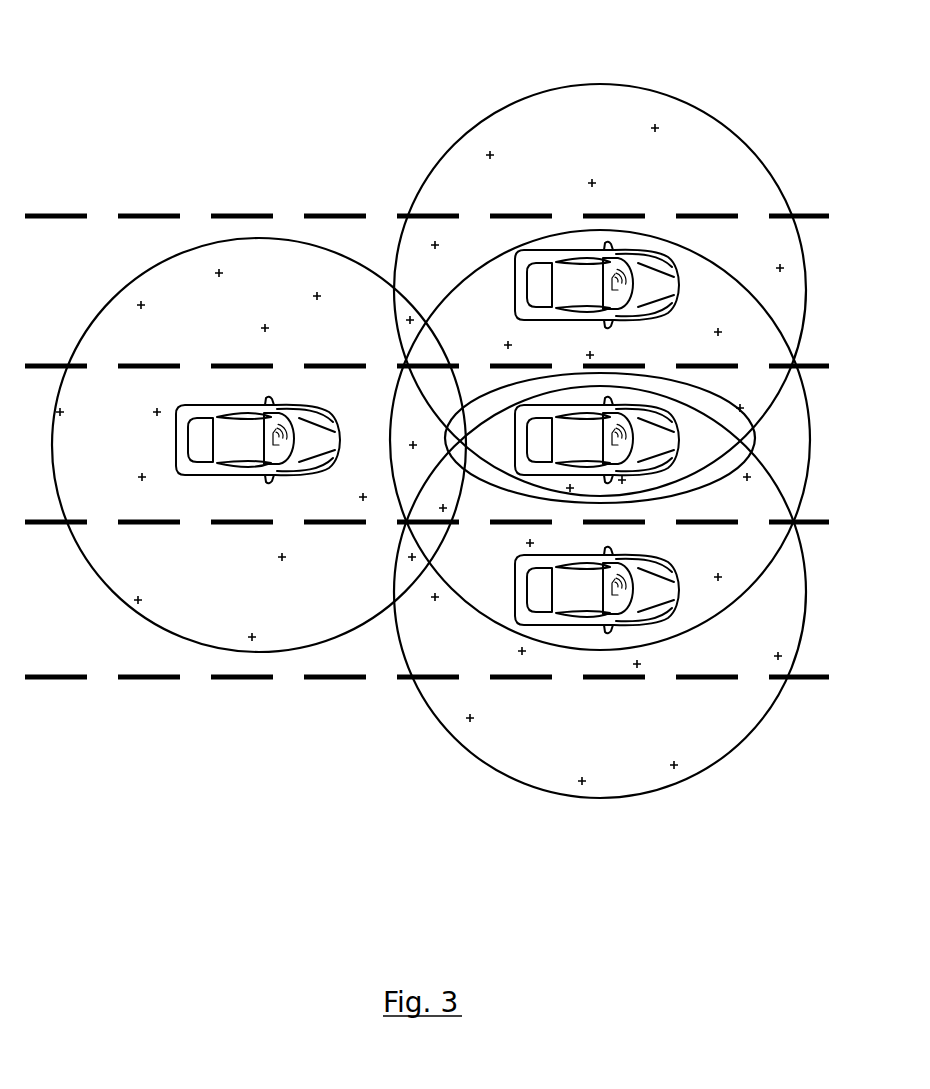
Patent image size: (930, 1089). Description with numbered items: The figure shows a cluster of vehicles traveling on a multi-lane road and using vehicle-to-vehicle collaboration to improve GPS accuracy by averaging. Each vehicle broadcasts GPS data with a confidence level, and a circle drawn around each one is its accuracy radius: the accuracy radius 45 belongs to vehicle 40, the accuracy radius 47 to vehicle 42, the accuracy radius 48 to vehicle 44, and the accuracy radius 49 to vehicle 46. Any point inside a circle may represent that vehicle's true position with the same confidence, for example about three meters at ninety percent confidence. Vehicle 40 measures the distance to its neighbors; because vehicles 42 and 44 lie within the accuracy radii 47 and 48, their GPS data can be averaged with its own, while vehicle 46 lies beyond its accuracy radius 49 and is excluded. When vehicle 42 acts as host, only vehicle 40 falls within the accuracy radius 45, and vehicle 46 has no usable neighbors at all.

The vehicle 40 is at (657, 413).
The vehicle 42 is at (657, 257).
The vehicle 44 is at (648, 560).
The accuracy radius 45 is at (477, 271).
The vehicle 46 is at (317, 405).
The accuracy radius 47 is at (703, 110).
The accuracy radius 48 is at (728, 747).
The accuracy radius 49 is at (283, 237).